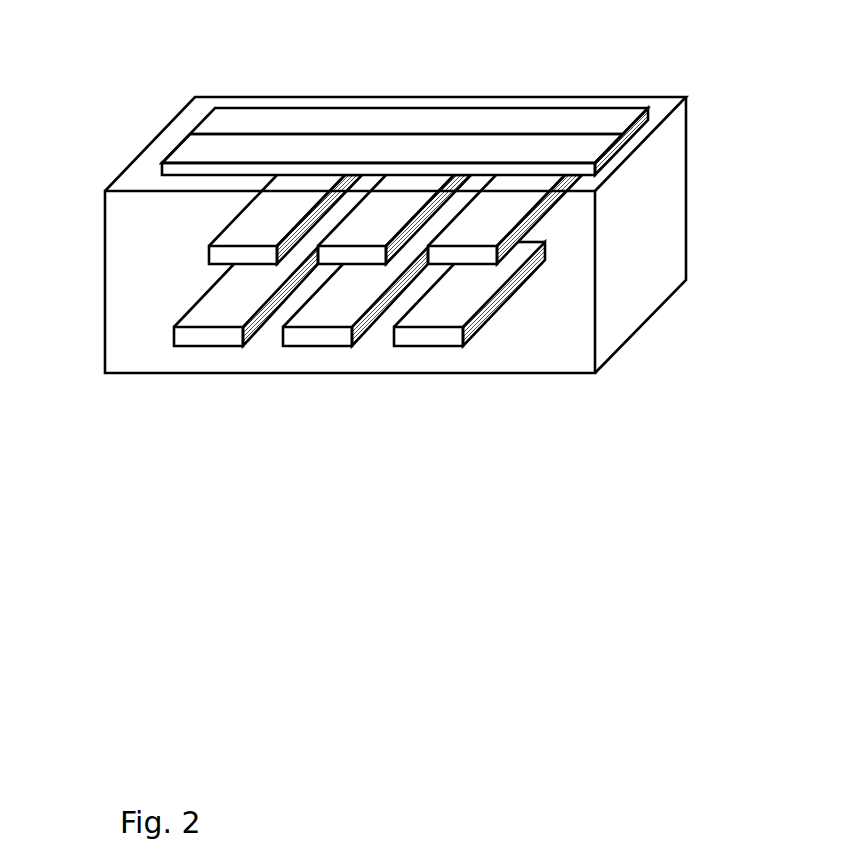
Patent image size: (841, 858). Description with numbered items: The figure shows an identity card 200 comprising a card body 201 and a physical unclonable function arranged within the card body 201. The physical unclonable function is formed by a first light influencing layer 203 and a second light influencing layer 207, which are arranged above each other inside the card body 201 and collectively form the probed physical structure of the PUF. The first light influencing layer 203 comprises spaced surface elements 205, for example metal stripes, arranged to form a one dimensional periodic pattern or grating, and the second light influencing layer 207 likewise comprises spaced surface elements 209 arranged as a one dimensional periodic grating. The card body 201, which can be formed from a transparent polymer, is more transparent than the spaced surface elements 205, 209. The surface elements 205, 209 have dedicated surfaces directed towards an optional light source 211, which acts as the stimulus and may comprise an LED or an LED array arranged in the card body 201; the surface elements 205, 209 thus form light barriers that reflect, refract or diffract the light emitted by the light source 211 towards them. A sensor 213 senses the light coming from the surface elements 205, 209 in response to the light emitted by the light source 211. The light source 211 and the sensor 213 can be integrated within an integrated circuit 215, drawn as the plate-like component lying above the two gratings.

The identity card 200 is at (212, 405).
The card body 201 is at (617, 329).
The first light influencing layer 203 is at (150, 343).
The spaced surface elements 205 is at (437, 323).
The second light influencing layer 207 is at (176, 259).
The spaced surface elements 209 is at (507, 228).
The light source 211 is at (267, 127).
The sensor 213 is at (525, 148).
The integrated circuit 215 is at (175, 124).